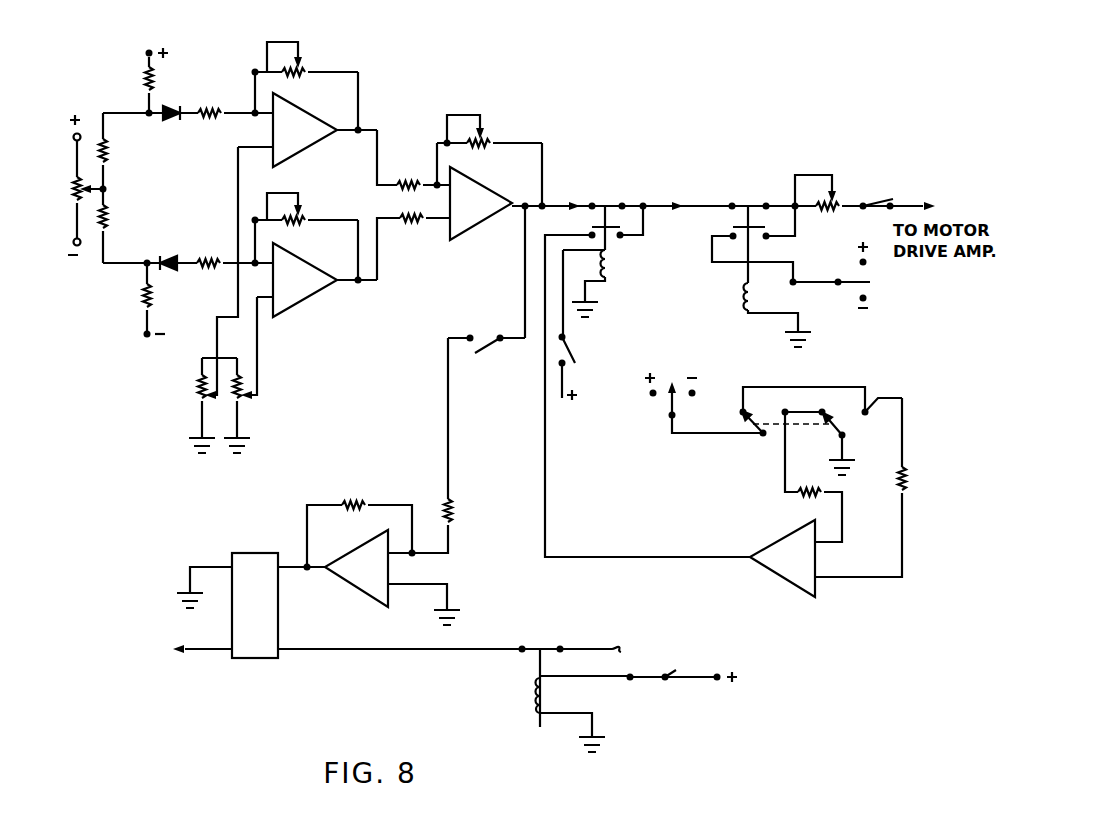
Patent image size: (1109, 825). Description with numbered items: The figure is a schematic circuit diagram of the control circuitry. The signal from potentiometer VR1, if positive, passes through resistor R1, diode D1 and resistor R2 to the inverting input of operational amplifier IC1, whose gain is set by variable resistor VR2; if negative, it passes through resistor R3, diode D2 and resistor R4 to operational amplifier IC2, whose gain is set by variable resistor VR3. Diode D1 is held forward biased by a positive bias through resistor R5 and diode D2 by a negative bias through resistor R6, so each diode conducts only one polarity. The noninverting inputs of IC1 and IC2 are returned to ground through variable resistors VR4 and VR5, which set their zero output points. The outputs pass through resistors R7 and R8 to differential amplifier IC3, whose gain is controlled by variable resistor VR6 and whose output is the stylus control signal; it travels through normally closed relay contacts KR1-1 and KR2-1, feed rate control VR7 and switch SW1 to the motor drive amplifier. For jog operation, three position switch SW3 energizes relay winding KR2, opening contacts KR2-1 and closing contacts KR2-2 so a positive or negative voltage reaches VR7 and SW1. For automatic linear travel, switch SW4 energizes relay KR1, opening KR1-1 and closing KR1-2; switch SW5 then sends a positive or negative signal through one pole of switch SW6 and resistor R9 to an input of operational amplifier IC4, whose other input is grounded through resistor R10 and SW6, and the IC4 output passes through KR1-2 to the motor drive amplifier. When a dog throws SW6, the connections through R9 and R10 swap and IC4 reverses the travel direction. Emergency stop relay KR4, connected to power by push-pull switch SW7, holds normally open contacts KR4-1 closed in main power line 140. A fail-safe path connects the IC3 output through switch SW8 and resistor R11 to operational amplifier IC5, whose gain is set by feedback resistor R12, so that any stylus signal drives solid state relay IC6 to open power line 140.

The potentiometer VR1 is at (70, 185).
The resistor R1 is at (118, 152).
The resistor R2 is at (210, 100).
The resistor R3 is at (117, 223).
The resistor R4 is at (209, 275).
The resistor R5 is at (135, 82).
The resistor R6 is at (133, 295).
The resistor R7 is at (410, 174).
The resistor R8 is at (412, 228).
The resistor R9 is at (914, 478).
The resistor R10 is at (813, 482).
The resistor R11 is at (466, 512).
The feedback resistor R12 is at (359, 524).
The diode D1 is at (170, 101).
The diode D2 is at (170, 253).
The variable resistor VR2 is at (294, 71).
The variable resistor VR3 is at (295, 220).
The variable resistor VR4 is at (259, 398).
The variable resistor VR5 is at (180, 389).
The variable resistor VR6 is at (474, 144).
The feed rate control variable resistor VR7 is at (823, 213).
The operational amplifier IC1 is at (305, 130).
The operational amplifier IC2 is at (305, 280).
The operational amplifier IC3 is at (481, 203).
The operational amplifier IC4 is at (782, 558).
The operational amplifier IC5 is at (356, 568).
The solid state relay IC6 is at (255, 605).
The relay KR1 is at (612, 283).
The relay contacts KR1-1 is at (616, 214).
The relay contacts KR1-2 is at (631, 232).
The relay winding KR2 is at (755, 315).
The relay contacts KR2-1 is at (752, 232).
The relay contacts KR2-2 is at (769, 244).
The relay KR4 is at (547, 715).
The relay contacts KR4-1 is at (570, 638).
The switch SW1 is at (878, 195).
The three position switch SW3 is at (830, 275).
The switch SW4 is at (588, 367).
The switch SW5 is at (657, 398).
The switch SW6 is at (821, 431).
The push-pull switch SW7 is at (682, 687).
The switch SW8 is at (486, 333).
The main power line 140 is at (365, 650).